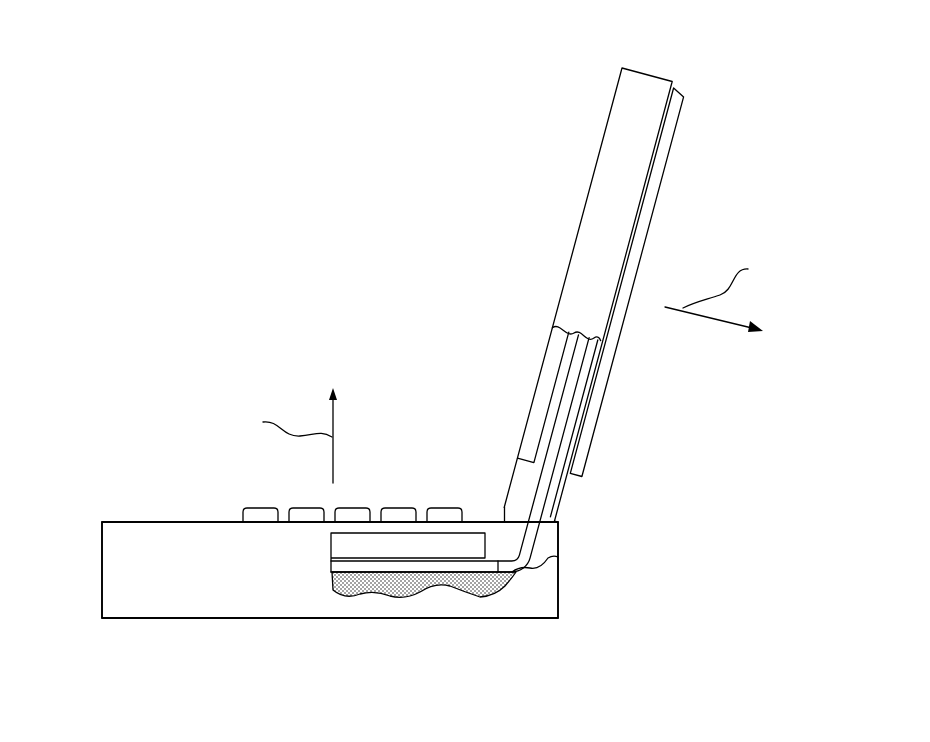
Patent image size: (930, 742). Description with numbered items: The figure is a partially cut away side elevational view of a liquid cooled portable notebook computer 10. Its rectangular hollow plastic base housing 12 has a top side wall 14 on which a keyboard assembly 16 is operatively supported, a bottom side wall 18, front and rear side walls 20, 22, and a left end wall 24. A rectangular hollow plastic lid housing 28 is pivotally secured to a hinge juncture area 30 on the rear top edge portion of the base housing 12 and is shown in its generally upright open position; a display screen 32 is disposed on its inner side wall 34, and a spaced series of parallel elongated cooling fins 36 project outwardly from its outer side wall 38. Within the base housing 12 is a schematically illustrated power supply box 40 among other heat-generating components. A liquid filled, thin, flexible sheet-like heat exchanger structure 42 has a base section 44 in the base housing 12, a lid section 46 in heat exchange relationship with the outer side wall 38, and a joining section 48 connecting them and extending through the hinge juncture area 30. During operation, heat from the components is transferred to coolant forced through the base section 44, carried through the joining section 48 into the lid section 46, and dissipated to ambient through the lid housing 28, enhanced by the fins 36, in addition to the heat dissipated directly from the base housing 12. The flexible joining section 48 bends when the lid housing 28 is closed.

The portable notebook computer 10 is at (183, 350).
The base housing 12 is at (91, 565).
The top side wall 14 is at (160, 522).
The keyboard assembly 16 is at (413, 474).
The bottom side wall 18 is at (160, 618).
The front side wall 20 is at (100, 595).
The rear side wall 22 is at (560, 586).
The left end wall 24 is at (208, 582).
The lid housing 28 is at (660, 74).
The hinge juncture area 30 is at (506, 508).
The display screen 32 is at (540, 394).
The inner side wall 34 is at (583, 214).
The cooling fins 36 is at (669, 153).
The outer side wall 38 is at (562, 505).
The power supply box 40 is at (372, 548).
The heat exchanger structure 42 is at (470, 588).
The base section 44 is at (404, 575).
The lid section 46 is at (584, 405).
The joining section 48 is at (552, 531).